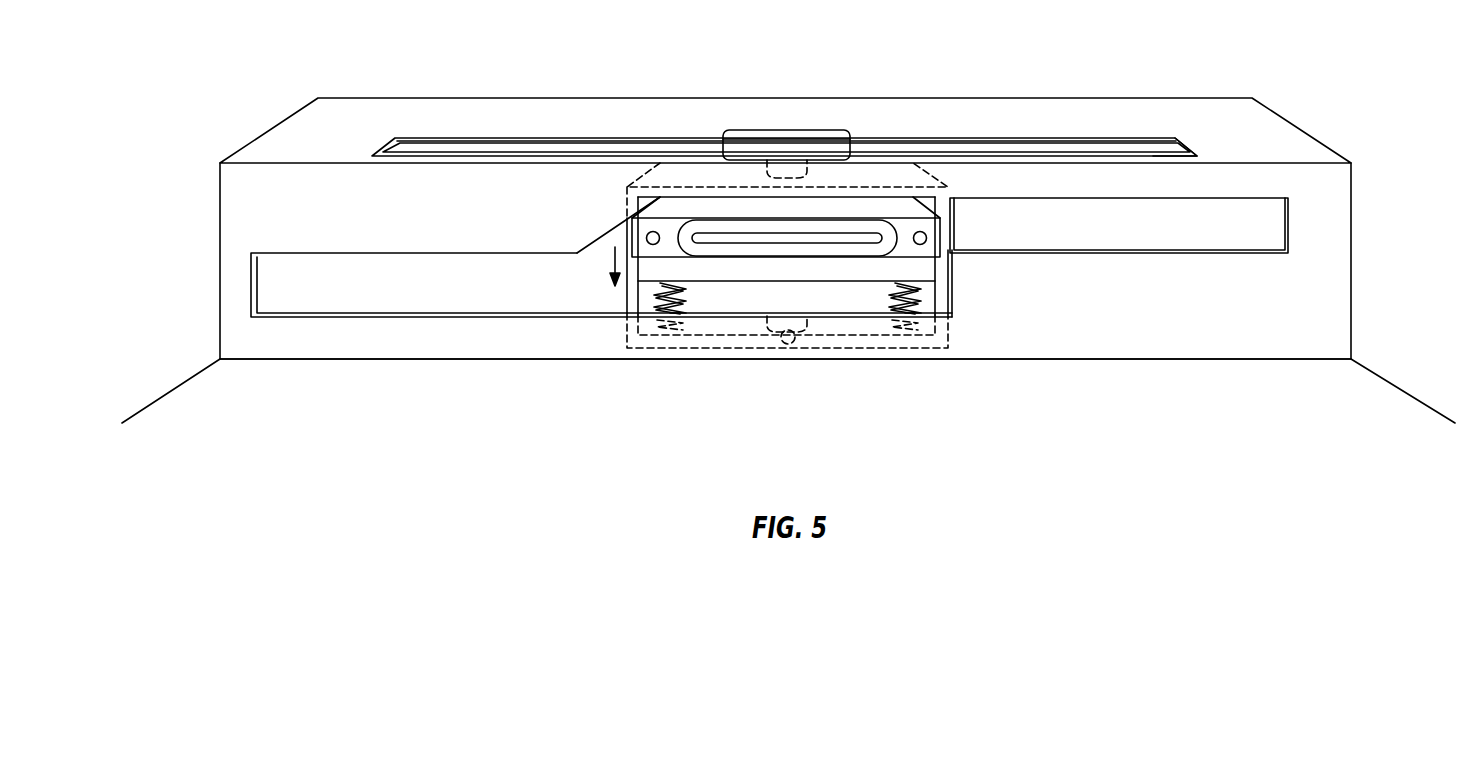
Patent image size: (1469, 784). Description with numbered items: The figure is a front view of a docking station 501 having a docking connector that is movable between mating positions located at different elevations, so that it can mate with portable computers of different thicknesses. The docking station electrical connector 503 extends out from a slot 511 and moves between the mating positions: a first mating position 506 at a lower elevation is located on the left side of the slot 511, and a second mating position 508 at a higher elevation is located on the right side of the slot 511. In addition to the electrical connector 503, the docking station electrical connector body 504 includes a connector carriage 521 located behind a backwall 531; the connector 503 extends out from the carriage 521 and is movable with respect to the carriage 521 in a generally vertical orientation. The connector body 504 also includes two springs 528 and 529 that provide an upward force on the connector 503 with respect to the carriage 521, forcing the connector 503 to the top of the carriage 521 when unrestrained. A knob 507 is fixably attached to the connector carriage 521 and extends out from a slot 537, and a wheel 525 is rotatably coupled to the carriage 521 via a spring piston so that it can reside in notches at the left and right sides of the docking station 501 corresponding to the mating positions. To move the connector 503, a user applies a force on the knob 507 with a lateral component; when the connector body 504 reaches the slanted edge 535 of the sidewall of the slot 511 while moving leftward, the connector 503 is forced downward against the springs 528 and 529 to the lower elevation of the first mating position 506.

The docking station 501 is at (957, 80).
The docking station electrical connector 503 is at (940, 257).
The docking station electrical connector body 504 is at (648, 172).
The first mating position 506 is at (328, 285).
The knob 507 is at (750, 137).
The second mating position 508 is at (1257, 215).
The slot 511 is at (1023, 220).
The connector carriage 521 is at (945, 243).
The wheel 525 is at (787, 333).
The spring 528 is at (663, 317).
The spring 529 is at (900, 317).
The backwall 531 is at (1188, 323).
The slanted edge 535 is at (597, 240).
The slot 537 is at (1153, 152).